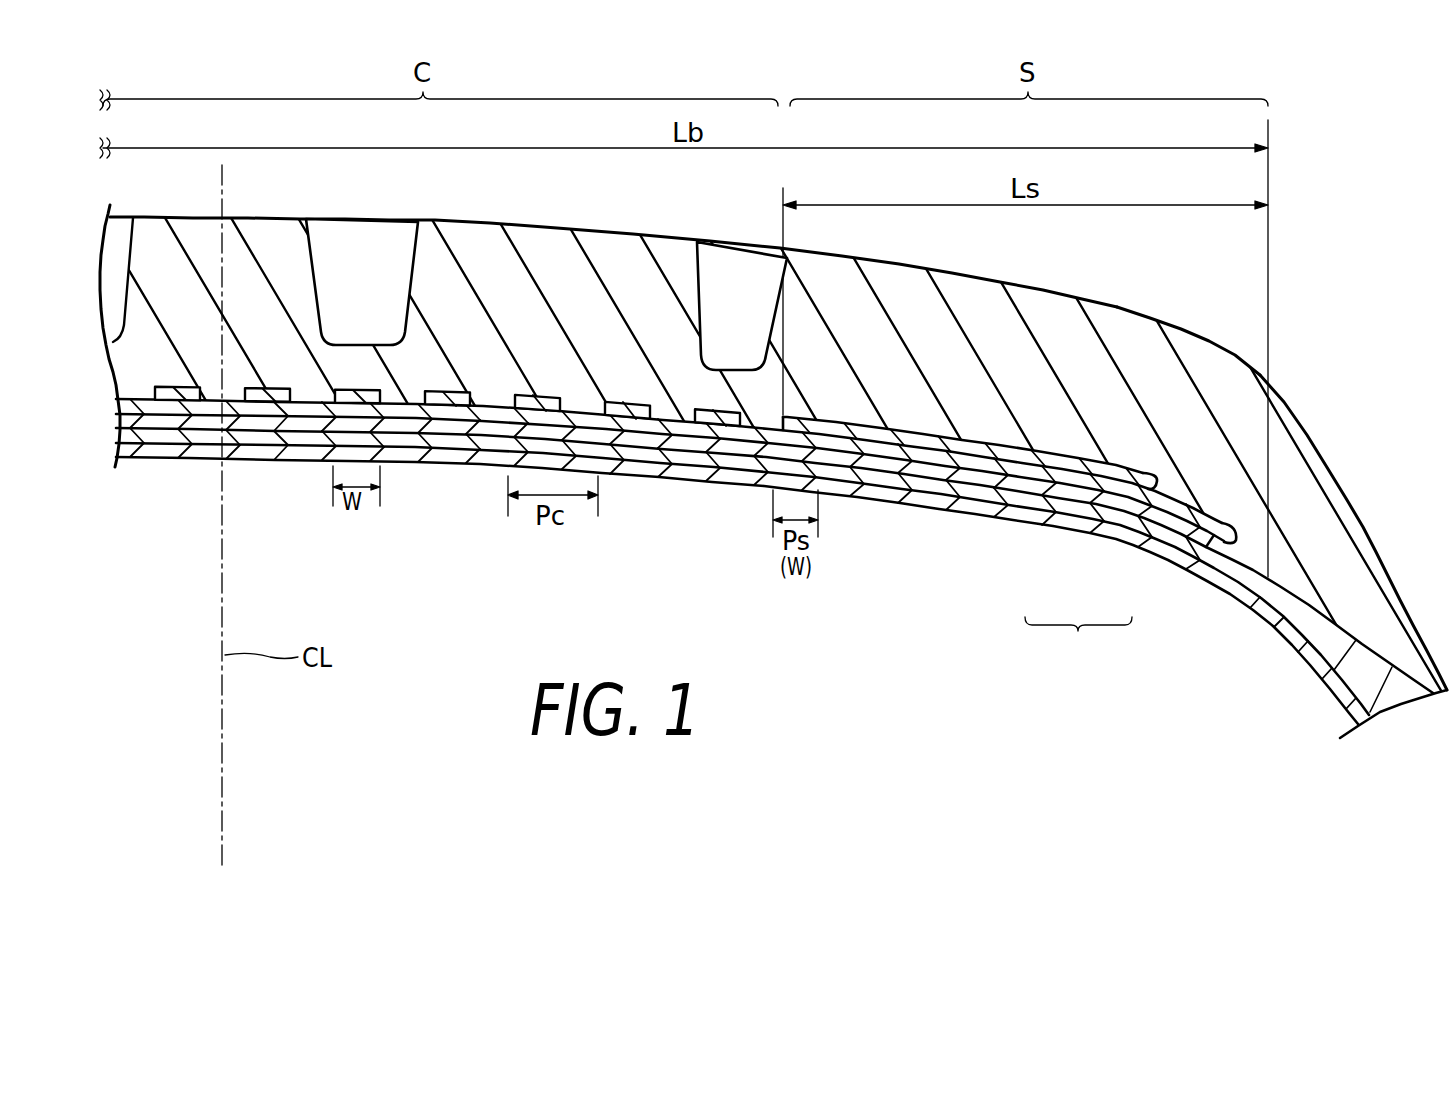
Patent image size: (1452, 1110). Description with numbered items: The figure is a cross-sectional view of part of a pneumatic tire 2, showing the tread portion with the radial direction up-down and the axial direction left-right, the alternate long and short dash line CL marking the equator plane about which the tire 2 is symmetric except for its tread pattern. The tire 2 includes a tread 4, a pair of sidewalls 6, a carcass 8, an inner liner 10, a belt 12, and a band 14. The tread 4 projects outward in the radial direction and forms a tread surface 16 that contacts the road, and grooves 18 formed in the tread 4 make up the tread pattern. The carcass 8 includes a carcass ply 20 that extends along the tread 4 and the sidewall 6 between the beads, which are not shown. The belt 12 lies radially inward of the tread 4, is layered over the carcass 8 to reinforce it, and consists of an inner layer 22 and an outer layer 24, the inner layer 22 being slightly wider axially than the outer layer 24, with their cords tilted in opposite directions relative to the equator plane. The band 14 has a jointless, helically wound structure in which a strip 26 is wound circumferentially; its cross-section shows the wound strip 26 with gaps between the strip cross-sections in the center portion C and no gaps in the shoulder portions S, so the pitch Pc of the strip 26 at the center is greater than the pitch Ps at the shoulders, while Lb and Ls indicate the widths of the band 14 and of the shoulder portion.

The pneumatic tire 2 is at (1358, 96).
The tread 4 is at (612, 247).
The sidewall 6 is at (1363, 647).
The carcass 8 is at (266, 437).
The inner liner 10 is at (1307, 650).
The belt 12 is at (676, 531).
The band 14 is at (702, 410).
The tread surface 16 is at (1123, 302).
The groove 18 is at (413, 260).
The carcass ply 20 is at (665, 494).
The inner layer 22 is at (1045, 490).
The outer layer 24 is at (1108, 488).
The strip 26 is at (454, 467).